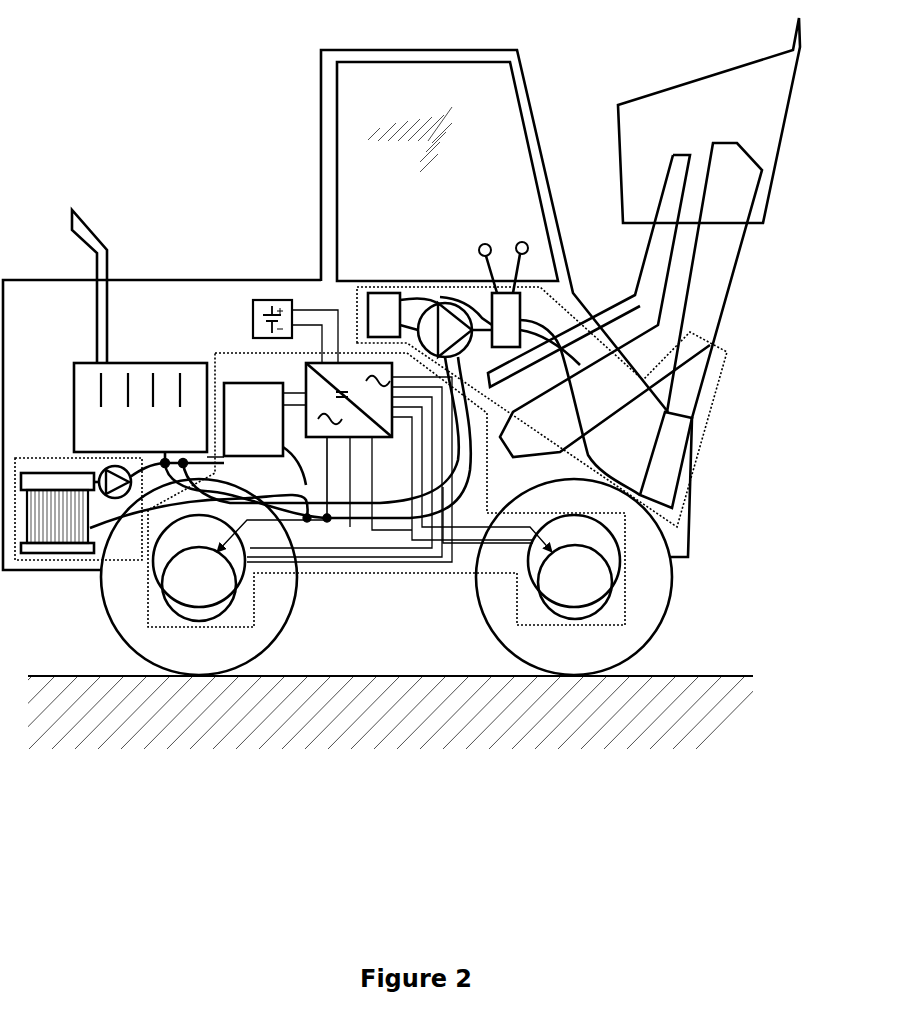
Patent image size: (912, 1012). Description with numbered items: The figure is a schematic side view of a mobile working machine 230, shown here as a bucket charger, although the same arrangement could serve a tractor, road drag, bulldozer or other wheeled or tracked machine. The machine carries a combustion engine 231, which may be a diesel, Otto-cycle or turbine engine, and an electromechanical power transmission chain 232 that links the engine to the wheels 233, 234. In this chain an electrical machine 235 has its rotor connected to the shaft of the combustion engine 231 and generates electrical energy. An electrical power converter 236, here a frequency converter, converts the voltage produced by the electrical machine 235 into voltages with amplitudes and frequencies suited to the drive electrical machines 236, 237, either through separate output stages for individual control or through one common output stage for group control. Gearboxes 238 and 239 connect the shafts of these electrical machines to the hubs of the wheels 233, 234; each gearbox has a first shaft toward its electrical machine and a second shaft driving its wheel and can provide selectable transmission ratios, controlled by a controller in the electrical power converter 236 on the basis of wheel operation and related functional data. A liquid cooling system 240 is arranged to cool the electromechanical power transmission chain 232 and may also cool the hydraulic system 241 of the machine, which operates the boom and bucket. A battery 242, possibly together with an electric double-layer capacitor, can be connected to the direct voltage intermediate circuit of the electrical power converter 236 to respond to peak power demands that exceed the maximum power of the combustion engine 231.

The mobile working machine 230 is at (298, 129).
The combustion engine 231 is at (140, 407).
The electromechanical power transmission chain 232 is at (432, 577).
The wheel 233 is at (199, 577).
The wheel 234 is at (574, 577).
The electrical machine 235 is at (256, 424).
The electrical power converter 236 is at (306, 378).
The electrical machine 237 is at (574, 561).
The gearbox 238 is at (199, 568).
The gearbox 239 is at (575, 582).
The liquid cooling system 240 is at (52, 562).
The hydraulic system 241 is at (705, 428).
The battery 242 is at (253, 325).